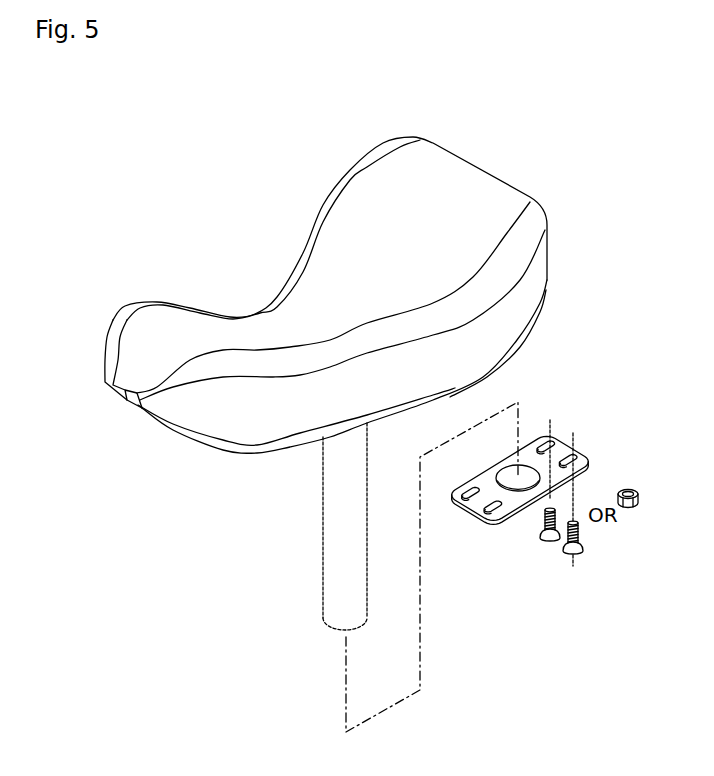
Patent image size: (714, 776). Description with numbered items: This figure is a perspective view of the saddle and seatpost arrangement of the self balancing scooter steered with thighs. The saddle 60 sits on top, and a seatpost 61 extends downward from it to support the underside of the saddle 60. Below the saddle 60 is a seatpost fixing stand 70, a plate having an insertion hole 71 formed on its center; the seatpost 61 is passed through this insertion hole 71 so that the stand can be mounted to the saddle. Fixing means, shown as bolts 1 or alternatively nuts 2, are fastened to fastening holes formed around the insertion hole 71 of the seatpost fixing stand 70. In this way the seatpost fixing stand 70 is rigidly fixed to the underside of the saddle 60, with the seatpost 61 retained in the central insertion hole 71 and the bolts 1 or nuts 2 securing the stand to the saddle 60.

The saddle 60 is at (472, 178).
The seatpost 61 is at (332, 563).
The seatpost fixing stand 70 is at (543, 485).
The insertion hole 71 is at (517, 484).
The bolt 1 is at (561, 503).
The nut 2 is at (638, 498).